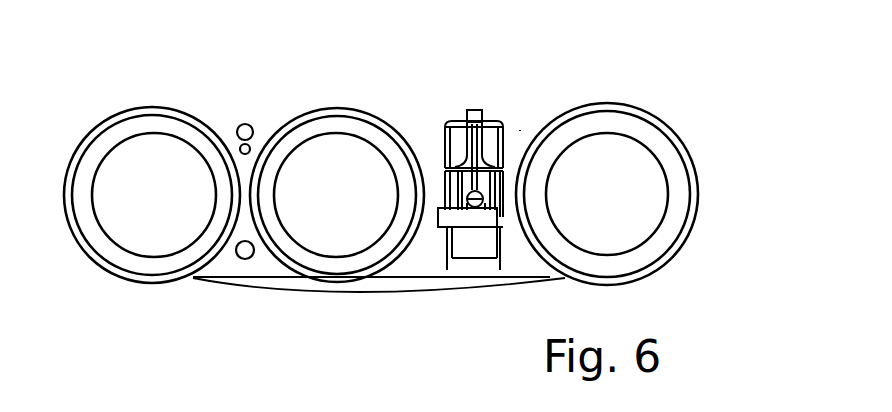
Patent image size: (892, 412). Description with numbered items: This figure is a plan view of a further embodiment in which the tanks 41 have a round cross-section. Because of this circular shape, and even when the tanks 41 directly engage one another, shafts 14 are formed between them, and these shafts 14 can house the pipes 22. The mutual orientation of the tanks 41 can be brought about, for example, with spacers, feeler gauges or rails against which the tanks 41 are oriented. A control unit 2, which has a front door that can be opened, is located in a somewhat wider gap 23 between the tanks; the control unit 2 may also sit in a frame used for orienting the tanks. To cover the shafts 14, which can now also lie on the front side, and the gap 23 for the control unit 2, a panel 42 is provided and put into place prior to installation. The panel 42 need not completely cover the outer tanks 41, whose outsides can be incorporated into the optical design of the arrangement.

The control unit 2 is at (473, 253).
The shafts 14 is at (262, 120).
The pipes 22 is at (243, 125).
The gap 23 is at (520, 130).
The tanks 41 is at (657, 120).
The panel 42 is at (328, 288).